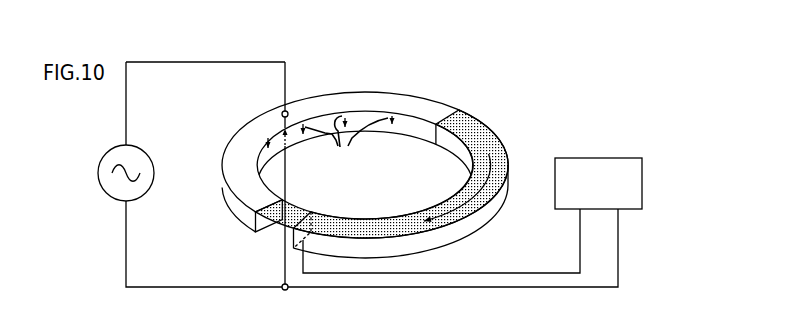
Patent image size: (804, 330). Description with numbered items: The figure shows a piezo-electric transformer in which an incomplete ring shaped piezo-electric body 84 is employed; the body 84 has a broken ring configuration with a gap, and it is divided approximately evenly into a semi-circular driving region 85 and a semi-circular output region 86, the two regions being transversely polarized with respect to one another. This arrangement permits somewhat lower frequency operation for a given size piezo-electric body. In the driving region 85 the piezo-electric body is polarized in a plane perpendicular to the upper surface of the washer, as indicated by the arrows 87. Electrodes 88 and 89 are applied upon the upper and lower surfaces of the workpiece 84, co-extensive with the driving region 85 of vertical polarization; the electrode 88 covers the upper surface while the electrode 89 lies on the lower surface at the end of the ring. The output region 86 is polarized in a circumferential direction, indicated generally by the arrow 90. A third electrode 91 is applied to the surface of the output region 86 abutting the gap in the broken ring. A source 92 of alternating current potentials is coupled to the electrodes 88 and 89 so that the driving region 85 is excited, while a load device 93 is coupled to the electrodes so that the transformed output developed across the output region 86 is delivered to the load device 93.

The piezo-electric body 84 is at (407, 80).
The driving region 85 is at (233, 201).
The output region 86 is at (462, 232).
The arrows 87 is at (330, 138).
The electrode 88 is at (253, 128).
The electrode 89 is at (248, 212).
The arrow 90 is at (477, 195).
The third electrode 91 is at (295, 226).
The source of alternating current potentials 92 is at (98, 171).
The load device 93 is at (642, 182).